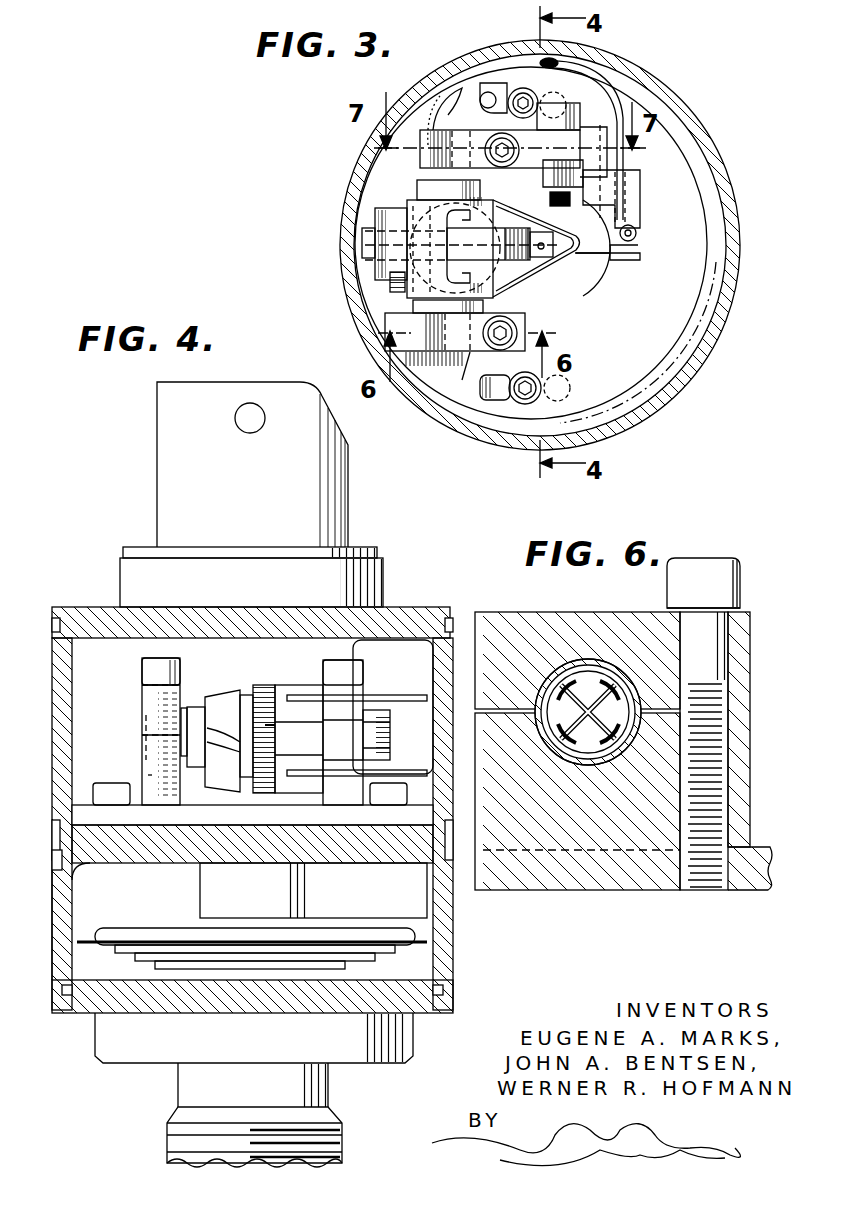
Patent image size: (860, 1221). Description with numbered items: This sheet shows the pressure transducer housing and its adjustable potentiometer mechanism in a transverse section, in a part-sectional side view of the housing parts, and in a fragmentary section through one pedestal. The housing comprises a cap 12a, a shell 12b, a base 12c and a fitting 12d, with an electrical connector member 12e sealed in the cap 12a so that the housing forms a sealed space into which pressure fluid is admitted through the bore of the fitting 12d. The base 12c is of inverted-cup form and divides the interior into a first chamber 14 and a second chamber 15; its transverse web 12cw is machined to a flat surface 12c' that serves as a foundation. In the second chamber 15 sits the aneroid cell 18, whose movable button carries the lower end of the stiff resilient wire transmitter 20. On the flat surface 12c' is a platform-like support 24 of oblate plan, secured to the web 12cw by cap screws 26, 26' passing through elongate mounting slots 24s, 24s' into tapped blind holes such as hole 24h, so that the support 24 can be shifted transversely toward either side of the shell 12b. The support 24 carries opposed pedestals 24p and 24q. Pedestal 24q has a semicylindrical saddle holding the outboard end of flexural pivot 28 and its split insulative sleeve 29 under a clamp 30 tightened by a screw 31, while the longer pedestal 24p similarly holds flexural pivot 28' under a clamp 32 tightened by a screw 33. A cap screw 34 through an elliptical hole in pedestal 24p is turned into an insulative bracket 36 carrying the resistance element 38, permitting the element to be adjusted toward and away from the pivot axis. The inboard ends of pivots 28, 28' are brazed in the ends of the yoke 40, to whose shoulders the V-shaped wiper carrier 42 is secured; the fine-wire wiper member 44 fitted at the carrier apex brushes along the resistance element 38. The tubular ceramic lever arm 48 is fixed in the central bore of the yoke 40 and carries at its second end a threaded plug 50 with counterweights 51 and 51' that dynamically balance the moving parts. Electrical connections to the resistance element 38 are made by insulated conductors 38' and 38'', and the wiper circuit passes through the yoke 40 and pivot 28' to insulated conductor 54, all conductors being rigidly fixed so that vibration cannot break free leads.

In FIG. 3, the shell 12b is at (693, 373).
In FIG. 3, the flat surface 12c' is at (568, 245).
In FIG. 4, the base 12c is at (35, 925).
In FIG. 4, the transverse web 12cw is at (347, 857).
In FIG. 4, the cap 12a is at (355, 578).
In FIG. 4, the electrical connector member 12e is at (318, 501).
In FIG. 4, the fitting 12d is at (188, 1143).
In FIG. 4, the first chamber 14 is at (83, 681).
In FIG. 4, the second chamber 15 is at (87, 886).
In FIG. 4, the aneroid cell 18 is at (153, 930).
In FIG. 3, the transmitter 20 is at (566, 252).
In FIG. 3, the support 24 is at (446, 373).
In FIG. 4, the support 24 is at (90, 817).
In FIG. 6, the support 24 is at (548, 871).
In FIG. 3, the mounting slots 24s is at (454, 414).
In FIG. 3, the mounting slots 24s' is at (464, 74).
In FIG. 3, the first pedestal 24p is at (592, 157).
In FIG. 4, the first pedestal 24p is at (352, 717).
In FIG. 3, the tapped blind hole 24h is at (571, 385).
In FIG. 4, the second pedestal 24q is at (147, 774).
In FIG. 6, the second pedestal 24q is at (738, 798).
In FIG. 3, the cap screw 26 is at (491, 421).
In FIG. 4, the cap screw 26 is at (72, 788).
In FIG. 3, the cap screw 26' is at (578, 77).
In FIG. 4, the cap screw 26' is at (399, 773).
In FIG. 3, the flexural pivot 28 is at (467, 309).
In FIG. 4, the flexural pivot 28 is at (199, 699).
In FIG. 6, the flexural pivot 28 is at (588, 674).
In FIG. 3, the flexural pivot 28' is at (430, 188).
In FIG. 6, the split insulative sleeve 29 is at (550, 673).
In FIG. 3, the clamp 30 is at (395, 335).
In FIG. 4, the clamp 30 is at (160, 698).
In FIG. 6, the clamp 30 is at (590, 633).
In FIG. 3, the screw 31 is at (519, 332).
In FIG. 4, the screw 31 is at (157, 673).
In FIG. 6, the screw 31 is at (687, 575).
In FIG. 3, the clamp 32 is at (422, 161).
In FIG. 3, the screw 33 is at (500, 136).
In FIG. 4, the screw 33 is at (333, 674).
In FIG. 3, the cap screw 34 is at (574, 108).
In FIG. 4, the cap screw 34 is at (378, 735).
In FIG. 3, the insulative bracket 36 is at (622, 183).
In FIG. 4, the insulative bracket 36 is at (288, 739).
In FIG. 3, the resistance element 38 is at (654, 237).
In FIG. 4, the resistance element 38 is at (287, 741).
In FIG. 4, the insulated conductor 38' is at (354, 801).
In FIG. 3, the insulated conductor 38'' is at (637, 140).
In FIG. 4, the insulated conductor 38'' is at (360, 707).
In FIG. 3, the yoke 40 is at (438, 222).
In FIG. 4, the yoke 40 is at (206, 705).
In FIG. 3, the wiper carrier 42 is at (568, 256).
In FIG. 4, the wiper carrier 42 is at (227, 775).
In FIG. 3, the wiper member 44 is at (642, 258).
In FIG. 4, the wiper member 44 is at (246, 781).
In FIG. 3, the lever arm 48 is at (480, 248).
In FIG. 3, the plug 50 is at (378, 244).
In FIG. 3, the counterweight 51 is at (343, 258).
In FIG. 3, the counterweight 51' is at (353, 292).
In FIG. 3, the insulated conductor 54 is at (436, 104).